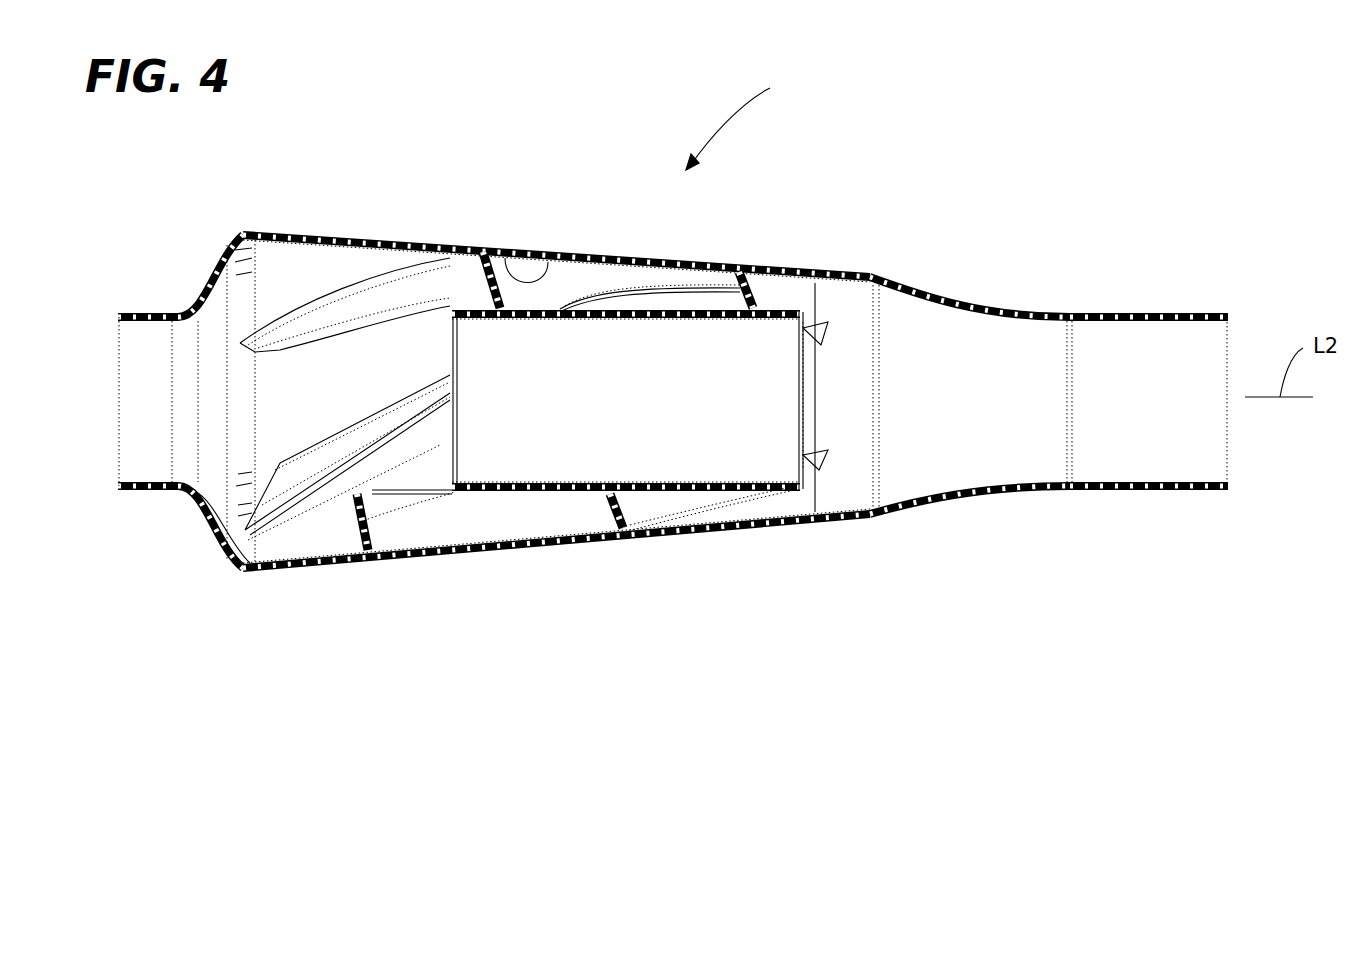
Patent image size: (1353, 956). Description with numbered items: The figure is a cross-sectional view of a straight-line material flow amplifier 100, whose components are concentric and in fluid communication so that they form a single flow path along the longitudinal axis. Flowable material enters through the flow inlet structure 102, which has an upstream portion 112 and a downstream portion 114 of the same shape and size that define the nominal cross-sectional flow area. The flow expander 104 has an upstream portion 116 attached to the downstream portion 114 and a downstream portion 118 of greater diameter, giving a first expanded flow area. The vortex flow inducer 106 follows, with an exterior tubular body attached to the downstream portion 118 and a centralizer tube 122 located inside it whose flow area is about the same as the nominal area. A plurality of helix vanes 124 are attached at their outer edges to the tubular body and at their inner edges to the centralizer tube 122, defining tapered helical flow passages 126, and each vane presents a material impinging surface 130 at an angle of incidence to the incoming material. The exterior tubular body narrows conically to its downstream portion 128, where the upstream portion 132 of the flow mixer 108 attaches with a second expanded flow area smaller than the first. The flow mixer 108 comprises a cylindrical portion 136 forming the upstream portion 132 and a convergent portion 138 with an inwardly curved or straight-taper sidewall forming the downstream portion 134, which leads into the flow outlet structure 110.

The straight-line material flow amplifier 100 is at (753, 118).
The flow inlet structure 102 is at (138, 492).
The flow expander 104 is at (207, 528).
The vortex flow inducer 106 is at (559, 535).
The flow mixer 108 is at (923, 517).
The flow outlet structure 110 is at (1200, 490).
The upstream portion of the flow inlet structure 112 is at (129, 315).
The downstream portion of the flow inlet structure 114 is at (152, 313).
The upstream portion of the flow expander 116 is at (172, 315).
The downstream portion of the flow expander 118 is at (230, 235).
The centralizer tube 122 is at (612, 316).
The helix vanes 124 is at (350, 322).
The helical flow passage 126 is at (263, 235).
The downstream portion of the exterior tubular body 128 is at (800, 272).
The material impinging surface 130 is at (428, 250).
The upstream portion of the flow mixer 132 is at (827, 280).
The downstream portion of the flow mixer 134 is at (1133, 313).
The cylindrical portion 136 is at (850, 527).
The convergent portion 138 is at (957, 512).